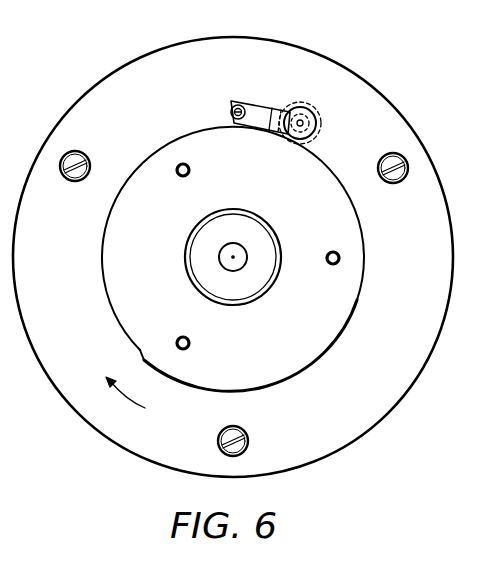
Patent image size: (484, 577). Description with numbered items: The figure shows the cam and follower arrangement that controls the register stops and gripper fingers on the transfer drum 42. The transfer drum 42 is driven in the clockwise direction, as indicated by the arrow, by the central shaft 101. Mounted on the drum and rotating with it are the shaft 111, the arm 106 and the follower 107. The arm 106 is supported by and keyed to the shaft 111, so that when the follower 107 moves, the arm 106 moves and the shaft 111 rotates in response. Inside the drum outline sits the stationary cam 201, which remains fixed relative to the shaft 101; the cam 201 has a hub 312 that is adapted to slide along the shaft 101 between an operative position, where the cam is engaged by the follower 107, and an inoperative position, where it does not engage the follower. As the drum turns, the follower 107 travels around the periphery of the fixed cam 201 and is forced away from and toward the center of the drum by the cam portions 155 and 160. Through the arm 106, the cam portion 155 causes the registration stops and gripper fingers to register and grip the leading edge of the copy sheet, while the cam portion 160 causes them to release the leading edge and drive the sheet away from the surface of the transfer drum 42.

The transfer drum 42 is at (340, 58).
The cam 201 is at (356, 212).
The cam portion 160 is at (180, 379).
The hub 312 is at (190, 232).
The shaft 101 is at (248, 253).
The arm 106 is at (261, 103).
The follower 107 is at (231, 111).
The shaft 111 is at (318, 124).
The cam portion 155 is at (258, 130).